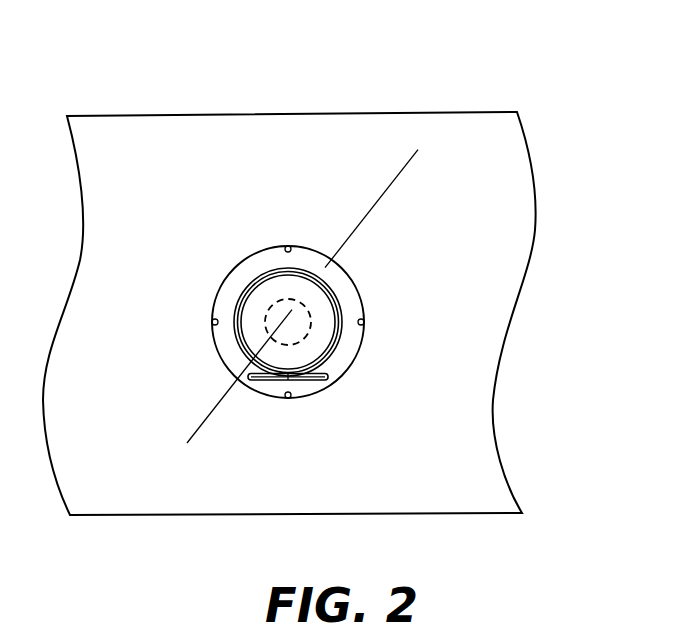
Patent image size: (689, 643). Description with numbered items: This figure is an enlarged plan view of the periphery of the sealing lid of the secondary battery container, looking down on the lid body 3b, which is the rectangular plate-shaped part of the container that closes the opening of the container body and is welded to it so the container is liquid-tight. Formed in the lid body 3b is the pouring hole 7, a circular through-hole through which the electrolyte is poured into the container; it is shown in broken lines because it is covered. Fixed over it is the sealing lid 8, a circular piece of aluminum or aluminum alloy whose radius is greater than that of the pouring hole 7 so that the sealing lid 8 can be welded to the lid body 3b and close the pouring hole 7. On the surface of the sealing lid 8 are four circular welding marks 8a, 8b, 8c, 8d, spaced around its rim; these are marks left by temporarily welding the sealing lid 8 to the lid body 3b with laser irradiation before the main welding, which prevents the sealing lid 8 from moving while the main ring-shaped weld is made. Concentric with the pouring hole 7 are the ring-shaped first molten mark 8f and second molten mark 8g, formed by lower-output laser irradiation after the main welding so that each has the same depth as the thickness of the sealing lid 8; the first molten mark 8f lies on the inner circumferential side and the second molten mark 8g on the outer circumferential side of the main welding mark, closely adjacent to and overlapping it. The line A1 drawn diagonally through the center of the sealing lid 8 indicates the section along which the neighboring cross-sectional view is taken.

The lid body 3b is at (473, 137).
The pouring hole 7 is at (276, 306).
The sealing lid 8 is at (318, 260).
The circular welding mark 8a is at (286, 246).
The circular welding mark 8b is at (289, 398).
The circular welding mark 8c is at (212, 324).
The circular welding mark 8d is at (364, 324).
The first molten mark 8f is at (333, 296).
The second molten mark 8g is at (340, 358).
The axis line A1 is at (403, 172).